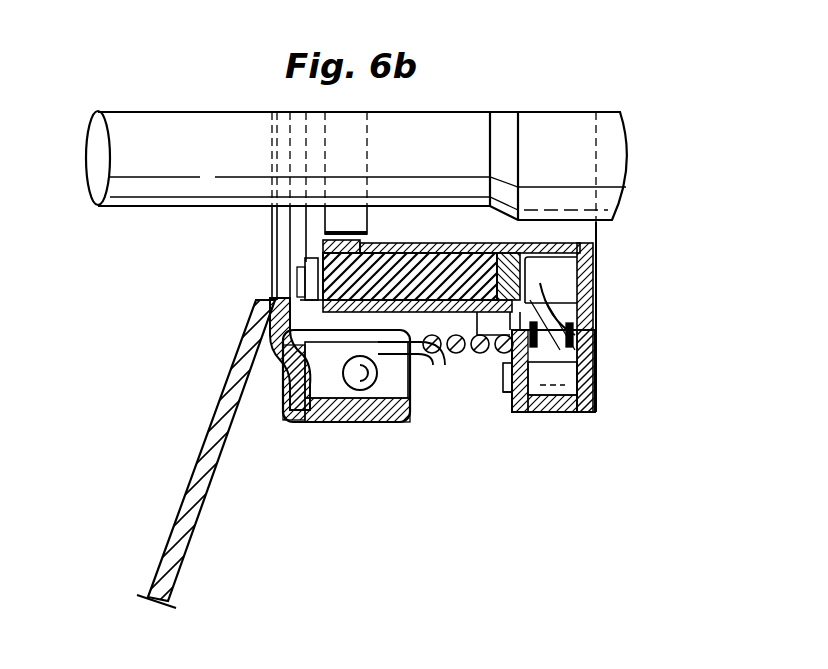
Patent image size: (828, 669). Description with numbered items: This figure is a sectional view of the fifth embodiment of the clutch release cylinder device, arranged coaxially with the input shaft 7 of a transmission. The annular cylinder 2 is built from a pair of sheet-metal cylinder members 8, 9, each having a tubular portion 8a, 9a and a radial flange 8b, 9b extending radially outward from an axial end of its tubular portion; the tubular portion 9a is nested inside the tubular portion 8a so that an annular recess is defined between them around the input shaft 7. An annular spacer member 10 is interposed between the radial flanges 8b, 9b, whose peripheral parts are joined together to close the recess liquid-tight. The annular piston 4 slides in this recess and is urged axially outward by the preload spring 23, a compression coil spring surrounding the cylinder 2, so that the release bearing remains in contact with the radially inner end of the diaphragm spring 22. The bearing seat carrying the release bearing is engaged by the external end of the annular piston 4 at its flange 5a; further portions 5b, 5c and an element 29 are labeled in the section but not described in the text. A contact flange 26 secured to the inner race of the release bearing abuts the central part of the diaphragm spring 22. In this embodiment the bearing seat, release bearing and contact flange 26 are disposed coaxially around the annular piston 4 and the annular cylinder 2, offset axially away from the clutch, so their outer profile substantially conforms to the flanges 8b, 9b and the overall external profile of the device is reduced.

The input shaft 7 is at (97, 162).
The annular piston 4 is at (385, 277).
The flange 5a is at (308, 293).
The lower body portion 5b is at (367, 338).
The arm portion 5c is at (440, 362).
The cylinder member 9 is at (550, 321).
The tubular portion 9a is at (578, 250).
The radial flange 9b is at (590, 310).
The annular cylinder 2 is at (560, 328).
The annular spacer member 10 is at (553, 412).
The preload spring 23 is at (457, 354).
The cylinder member 8 is at (513, 432).
The tubular portion 8a is at (480, 354).
The radial flange 8b is at (520, 408).
The contact flange 26 is at (268, 345).
The pin 29 is at (336, 338).
The diaphragm spring 22 is at (203, 469).